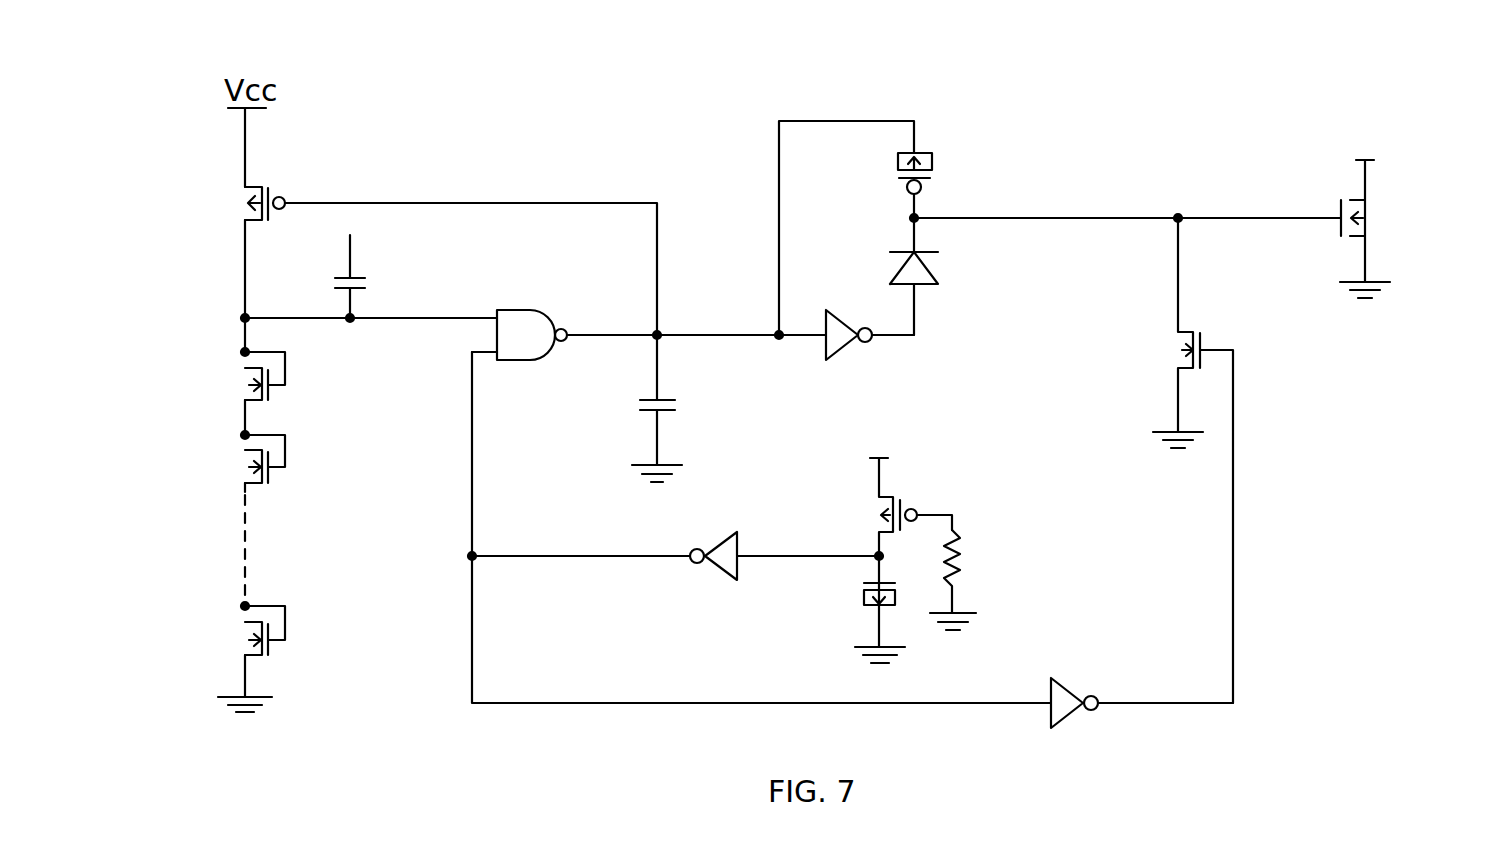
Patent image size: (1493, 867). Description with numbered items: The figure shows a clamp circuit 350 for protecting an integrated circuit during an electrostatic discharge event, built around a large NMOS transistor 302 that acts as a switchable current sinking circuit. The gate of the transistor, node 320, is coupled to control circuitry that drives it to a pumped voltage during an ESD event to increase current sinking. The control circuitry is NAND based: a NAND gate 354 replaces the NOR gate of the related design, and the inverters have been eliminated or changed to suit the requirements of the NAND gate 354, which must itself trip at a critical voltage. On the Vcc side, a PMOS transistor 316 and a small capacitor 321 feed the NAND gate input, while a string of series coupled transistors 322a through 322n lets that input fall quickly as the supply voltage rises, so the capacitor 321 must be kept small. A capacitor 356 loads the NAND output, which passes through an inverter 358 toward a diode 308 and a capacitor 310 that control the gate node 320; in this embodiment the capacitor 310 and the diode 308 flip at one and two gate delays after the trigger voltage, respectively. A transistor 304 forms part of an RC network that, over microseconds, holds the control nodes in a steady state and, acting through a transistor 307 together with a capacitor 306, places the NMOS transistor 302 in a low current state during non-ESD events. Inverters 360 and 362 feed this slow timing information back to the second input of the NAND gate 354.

The NMOS transistor 302 is at (1369, 218).
The transistor 304 is at (1176, 343).
The capacitor 306 is at (863, 598).
The transistor 307 is at (878, 512).
The diode 308 is at (941, 277).
The capacitor 310 is at (938, 163).
The transistor 316 is at (242, 207).
The node 320 is at (1264, 215).
The capacitor 321 is at (342, 274).
The series coupled transistor 322a is at (242, 374).
The series coupled transistor 322n is at (242, 628).
The clamp circuit 350 is at (1363, 455).
The NAND gate 354 is at (507, 310).
The capacitor 356 is at (650, 398).
The inverter 358 is at (840, 352).
The inverter 360 is at (1061, 677).
The inverter 362 is at (719, 570).